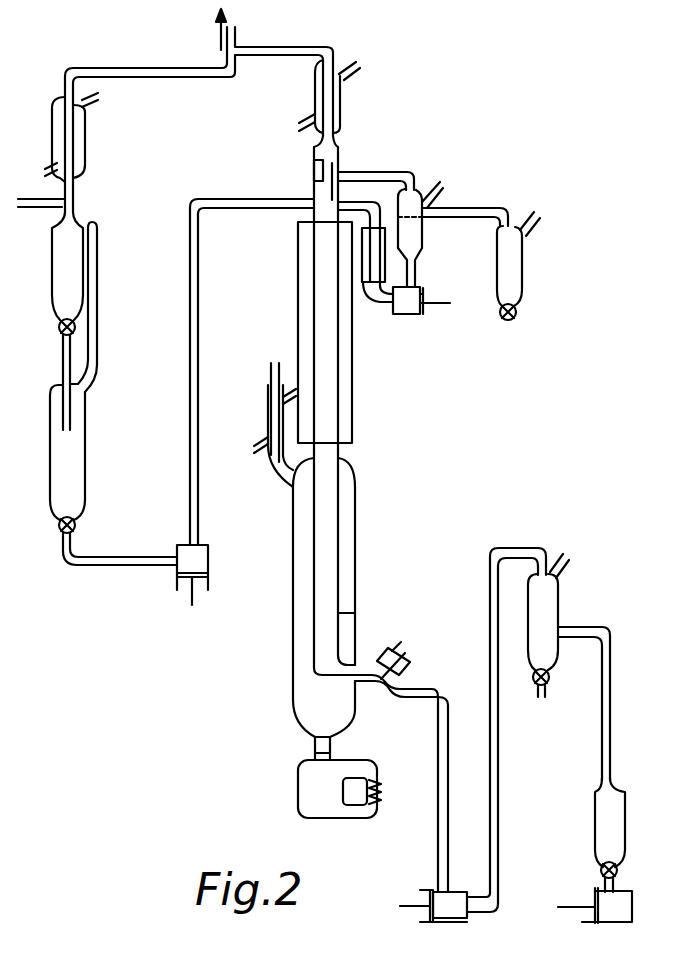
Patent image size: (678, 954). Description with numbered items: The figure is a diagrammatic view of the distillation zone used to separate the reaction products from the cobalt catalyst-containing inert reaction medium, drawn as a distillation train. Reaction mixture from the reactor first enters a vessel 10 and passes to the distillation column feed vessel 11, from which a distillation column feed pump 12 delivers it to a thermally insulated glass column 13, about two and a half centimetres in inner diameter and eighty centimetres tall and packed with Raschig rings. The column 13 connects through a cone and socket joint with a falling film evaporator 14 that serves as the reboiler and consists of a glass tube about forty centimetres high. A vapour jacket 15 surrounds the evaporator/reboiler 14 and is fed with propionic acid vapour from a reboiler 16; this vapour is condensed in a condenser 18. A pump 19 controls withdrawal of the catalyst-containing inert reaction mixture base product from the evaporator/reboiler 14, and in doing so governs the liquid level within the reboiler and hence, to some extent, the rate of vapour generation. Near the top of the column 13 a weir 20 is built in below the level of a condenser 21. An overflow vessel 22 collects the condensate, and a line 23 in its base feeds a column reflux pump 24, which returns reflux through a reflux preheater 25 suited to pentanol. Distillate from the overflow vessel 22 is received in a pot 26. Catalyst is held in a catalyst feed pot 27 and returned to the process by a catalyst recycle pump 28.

The vessel 10 is at (72, 222).
The distillation column feed vessel 11 is at (77, 465).
The distillation column feed pump 12 is at (211, 562).
The thermally insulated glass column 13 is at (298, 301).
The falling film evaporator 14 is at (347, 612).
The vapour jacket 15 is at (357, 538).
The reboiler 16 is at (298, 782).
The condenser 18 is at (268, 410).
The pump 19 is at (452, 892).
The weir 20 is at (314, 158).
The condenser 21 is at (343, 98).
The overflow vessel 22 is at (423, 238).
The line 23 is at (416, 274).
The column reflux pump 24 is at (407, 316).
The reflux preheater 25 is at (362, 290).
The pot 26 is at (497, 288).
The catalyst feed pot 27 is at (596, 820).
The catalyst recycle pump 28 is at (610, 923).